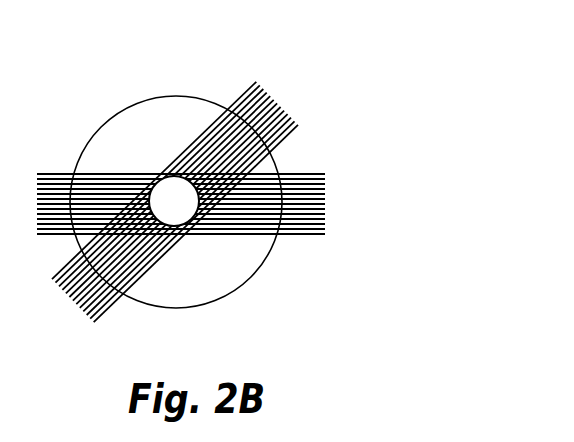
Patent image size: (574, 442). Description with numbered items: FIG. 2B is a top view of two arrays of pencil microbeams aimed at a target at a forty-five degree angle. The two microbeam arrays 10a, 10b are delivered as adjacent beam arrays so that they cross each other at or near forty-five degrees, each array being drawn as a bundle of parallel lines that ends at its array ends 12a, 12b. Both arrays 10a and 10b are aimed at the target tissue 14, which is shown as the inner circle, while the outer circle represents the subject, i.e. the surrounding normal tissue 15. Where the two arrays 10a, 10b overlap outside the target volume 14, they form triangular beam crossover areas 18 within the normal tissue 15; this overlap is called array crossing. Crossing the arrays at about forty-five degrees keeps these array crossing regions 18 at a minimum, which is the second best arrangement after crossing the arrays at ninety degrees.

The microbeam array 10a is at (53, 298).
The microbeam array 10b is at (332, 190).
The end of first fiber bundle 12a is at (239, 100).
The end of second fiber bundle 12b is at (60, 178).
The target tissue 14 is at (173, 207).
The normal tissue 15 is at (148, 97).
The beam crossover area 18 is at (144, 188).